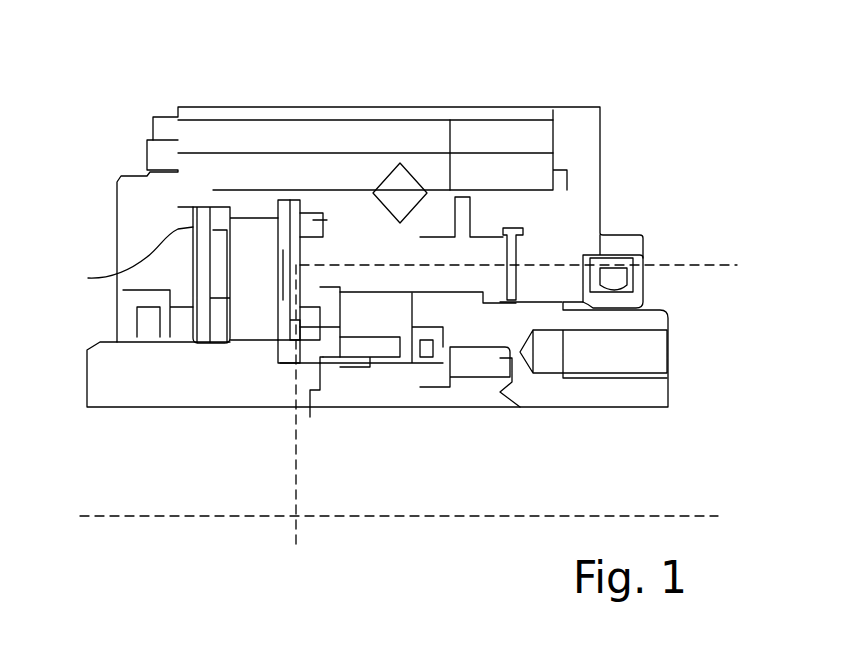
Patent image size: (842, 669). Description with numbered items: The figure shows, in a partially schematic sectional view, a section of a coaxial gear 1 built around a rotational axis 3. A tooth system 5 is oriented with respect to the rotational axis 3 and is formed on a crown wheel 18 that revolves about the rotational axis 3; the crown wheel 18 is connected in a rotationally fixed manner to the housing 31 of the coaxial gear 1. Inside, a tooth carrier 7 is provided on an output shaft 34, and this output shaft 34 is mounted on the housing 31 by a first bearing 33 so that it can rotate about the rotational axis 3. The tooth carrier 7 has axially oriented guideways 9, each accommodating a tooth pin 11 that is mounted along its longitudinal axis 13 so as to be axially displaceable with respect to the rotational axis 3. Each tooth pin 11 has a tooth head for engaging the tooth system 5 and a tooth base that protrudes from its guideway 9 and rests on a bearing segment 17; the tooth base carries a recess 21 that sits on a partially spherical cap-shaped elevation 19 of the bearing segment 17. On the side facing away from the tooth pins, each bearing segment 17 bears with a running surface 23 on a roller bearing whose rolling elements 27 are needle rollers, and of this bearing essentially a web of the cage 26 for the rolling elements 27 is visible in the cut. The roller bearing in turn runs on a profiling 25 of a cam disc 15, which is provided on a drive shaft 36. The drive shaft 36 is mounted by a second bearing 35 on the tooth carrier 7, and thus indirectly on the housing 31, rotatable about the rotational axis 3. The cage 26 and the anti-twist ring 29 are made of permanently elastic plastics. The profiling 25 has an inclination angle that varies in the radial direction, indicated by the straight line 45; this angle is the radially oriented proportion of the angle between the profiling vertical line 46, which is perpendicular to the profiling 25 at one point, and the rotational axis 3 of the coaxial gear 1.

The coaxial gear 1 is at (103, 107).
The rotational axis 3 is at (697, 516).
The tooth system 5 is at (513, 250).
The tooth carrier 7 is at (473, 218).
The guideways 9 is at (397, 340).
The tooth pins 11 is at (457, 197).
The longitudinal axes 13 is at (455, 250).
The cam disc 15 is at (238, 217).
The bearing segment 17 is at (287, 363).
The crown wheel 18 is at (603, 208).
The partially spherical cap-shaped elevation 19 is at (322, 243).
The recess 21 is at (317, 280).
The running surface 23 is at (300, 266).
The profiling 25 is at (278, 238).
The cage 26 is at (290, 215).
The rolling elements 27 is at (283, 230).
The anti-twist ring 29 is at (310, 417).
The housing 31 is at (325, 107).
The first bearing 33 is at (399, 163).
The output shaft 34 is at (587, 410).
The second bearing 35 is at (373, 368).
The drive shaft 36 is at (137, 404).
The straight line 45 is at (296, 518).
The profiling vertical line 46 is at (688, 265).